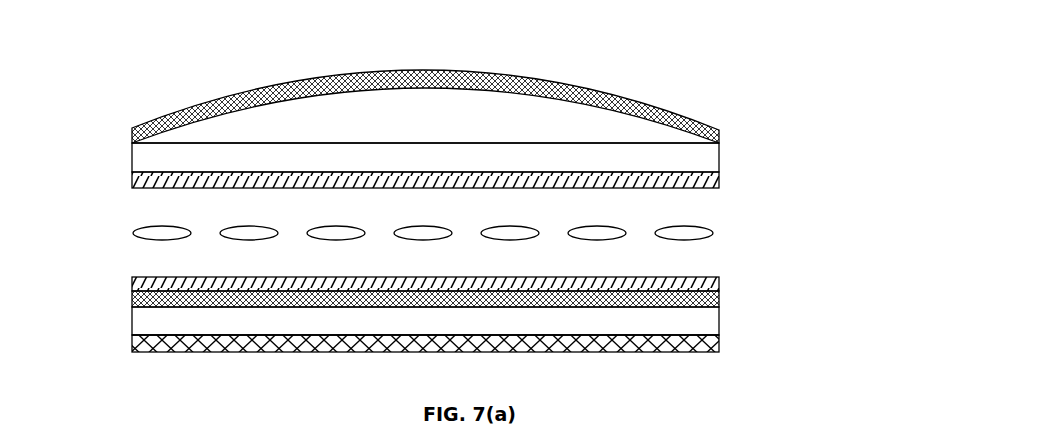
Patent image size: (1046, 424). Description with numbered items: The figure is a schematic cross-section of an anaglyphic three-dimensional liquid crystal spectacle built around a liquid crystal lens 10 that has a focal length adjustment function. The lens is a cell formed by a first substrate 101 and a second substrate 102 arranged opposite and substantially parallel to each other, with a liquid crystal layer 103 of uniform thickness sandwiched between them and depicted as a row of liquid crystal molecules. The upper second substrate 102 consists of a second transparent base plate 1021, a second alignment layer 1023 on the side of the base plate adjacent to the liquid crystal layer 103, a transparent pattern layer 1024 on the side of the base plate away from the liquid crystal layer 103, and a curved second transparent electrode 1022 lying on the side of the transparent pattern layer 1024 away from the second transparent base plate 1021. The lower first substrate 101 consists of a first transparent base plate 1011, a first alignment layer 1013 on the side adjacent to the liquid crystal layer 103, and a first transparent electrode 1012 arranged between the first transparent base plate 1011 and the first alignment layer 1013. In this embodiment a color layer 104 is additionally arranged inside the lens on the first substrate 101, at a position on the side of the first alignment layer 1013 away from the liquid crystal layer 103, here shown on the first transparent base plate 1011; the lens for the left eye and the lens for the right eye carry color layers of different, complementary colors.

The liquid crystal lens 10 is at (408, 40).
The second substrate 102 is at (828, 112).
The second transparent electrode 1022 is at (712, 120).
The transparent pattern layer 1024 is at (690, 139).
The second transparent base plate 1021 is at (719, 161).
The second alignment layer 1023 is at (719, 183).
The liquid crystal layer 103 is at (700, 233).
The first substrate 101 is at (828, 275).
The first alignment layer 1013 is at (719, 282).
The first transparent electrode 1012 is at (719, 301).
The first transparent base plate 1011 is at (719, 326).
The color layer 104 is at (132, 342).